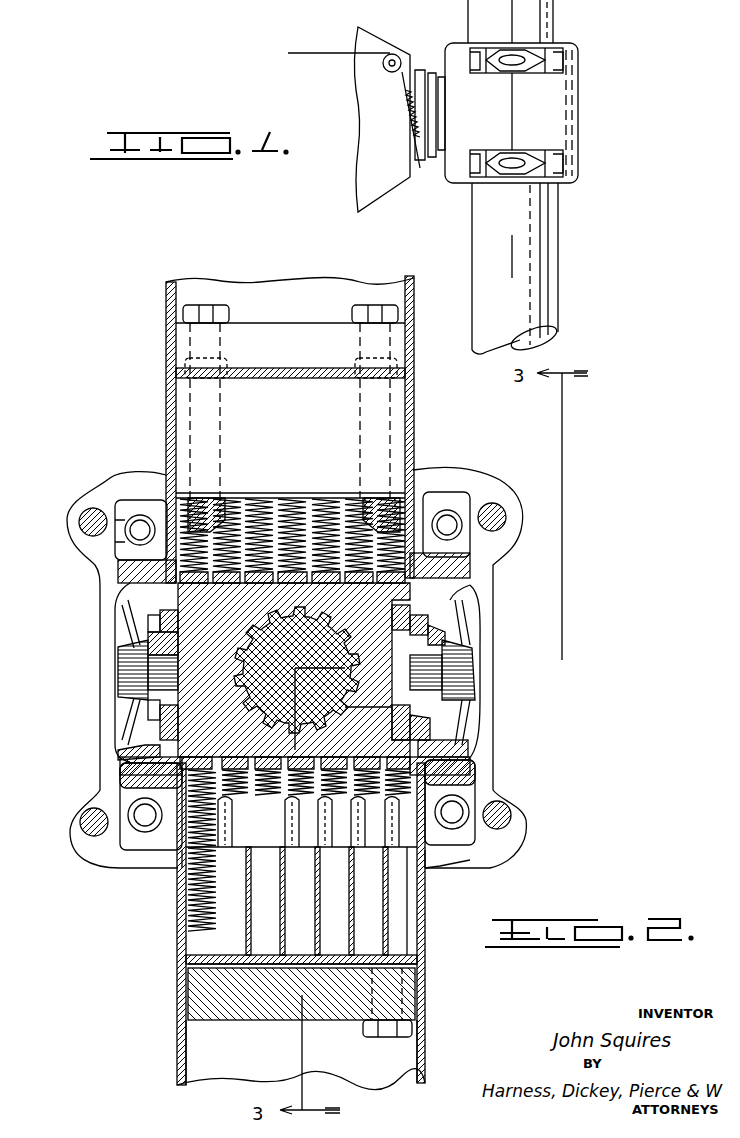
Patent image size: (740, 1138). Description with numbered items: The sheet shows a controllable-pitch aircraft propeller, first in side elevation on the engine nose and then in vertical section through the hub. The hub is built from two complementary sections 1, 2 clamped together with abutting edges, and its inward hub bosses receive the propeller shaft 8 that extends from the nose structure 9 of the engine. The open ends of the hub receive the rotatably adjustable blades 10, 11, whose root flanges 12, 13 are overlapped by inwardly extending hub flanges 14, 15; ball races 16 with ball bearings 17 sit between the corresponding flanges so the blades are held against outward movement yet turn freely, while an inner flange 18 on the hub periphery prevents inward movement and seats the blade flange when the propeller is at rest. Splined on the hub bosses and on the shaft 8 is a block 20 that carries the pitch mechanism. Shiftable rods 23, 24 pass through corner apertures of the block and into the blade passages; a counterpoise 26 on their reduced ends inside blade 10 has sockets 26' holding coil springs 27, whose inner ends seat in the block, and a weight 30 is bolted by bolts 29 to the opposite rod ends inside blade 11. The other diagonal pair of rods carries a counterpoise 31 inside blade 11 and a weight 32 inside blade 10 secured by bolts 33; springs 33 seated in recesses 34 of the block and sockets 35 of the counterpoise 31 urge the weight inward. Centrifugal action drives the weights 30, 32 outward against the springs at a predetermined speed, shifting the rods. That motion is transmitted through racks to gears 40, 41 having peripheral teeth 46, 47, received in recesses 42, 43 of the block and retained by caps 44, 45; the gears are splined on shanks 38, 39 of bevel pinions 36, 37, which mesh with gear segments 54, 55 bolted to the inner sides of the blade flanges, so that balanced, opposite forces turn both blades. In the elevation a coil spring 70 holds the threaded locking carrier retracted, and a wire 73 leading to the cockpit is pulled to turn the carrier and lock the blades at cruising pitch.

In FIG. 1, the hub section 1 is at (448, 48).
In FIG. 1, the hub section 2 is at (578, 70).
In FIG. 2, the propeller shaft 8 is at (350, 703).
In FIG. 1, the nose structure 9 is at (375, 203).
In FIG. 2, the propeller blade 10 is at (414, 336).
In FIG. 1, the propeller blade 11 is at (560, 240).
In FIG. 2, the propeller blade 11 is at (425, 990).
In FIG. 2, the radially extending flange 12 is at (480, 575).
In FIG. 2, the radially extending flange 13 is at (470, 752).
In FIG. 2, the inwardly extending flange 14 is at (440, 480).
In FIG. 2, the inwardly extending flange 15 is at (460, 872).
In FIG. 2, the ball race 16 is at (470, 492).
In FIG. 2, the ball bearing 17 is at (500, 492).
In FIG. 2, the inwardly extending flange 18 is at (468, 590).
In FIG. 2, the block 20 is at (440, 605).
In FIG. 2, the rod 23 is at (400, 492).
In FIG. 2, the rod 24 is at (153, 492).
In FIG. 2, the counterpoise 26 is at (333, 410).
In FIG. 2, the socket 26' is at (440, 901).
In FIG. 2, the coil spring 27 is at (320, 496).
In FIG. 2, the bolt 29 is at (203, 305).
In FIG. 2, the weight 30 is at (205, 1000).
In FIG. 2, the counterpoise 31 is at (417, 960).
In FIG. 2, the weight 32 is at (262, 330).
In FIG. 2, the spring 33 is at (190, 915).
In FIG. 2, the recess 34 is at (300, 830).
In FIG. 2, the socket 35 is at (185, 955).
In FIG. 2, the bevel pinion 36 is at (425, 668).
In FIG. 2, the bevel pinion 37 is at (125, 680).
In FIG. 2, the shank portion 38 is at (140, 700).
In FIG. 2, the shank portion 39 is at (468, 645).
In FIG. 2, the gear 40 is at (148, 718).
In FIG. 2, the gear 41 is at (470, 688).
In FIG. 2, the recess 42 is at (150, 640).
In FIG. 2, the recess 43 is at (432, 728).
In FIG. 2, the cap 44 is at (412, 618).
In FIG. 2, the cap 45 is at (148, 625).
In FIG. 2, the teeth 46 is at (478, 782).
In FIG. 2, the teeth 47 is at (125, 752).
In FIG. 2, the gear segment 54 is at (440, 636).
In FIG. 2, the gear segment 55 is at (118, 605).
In FIG. 1, the coil spring 70 is at (412, 152).
In FIG. 1, the wire 73 is at (325, 50).